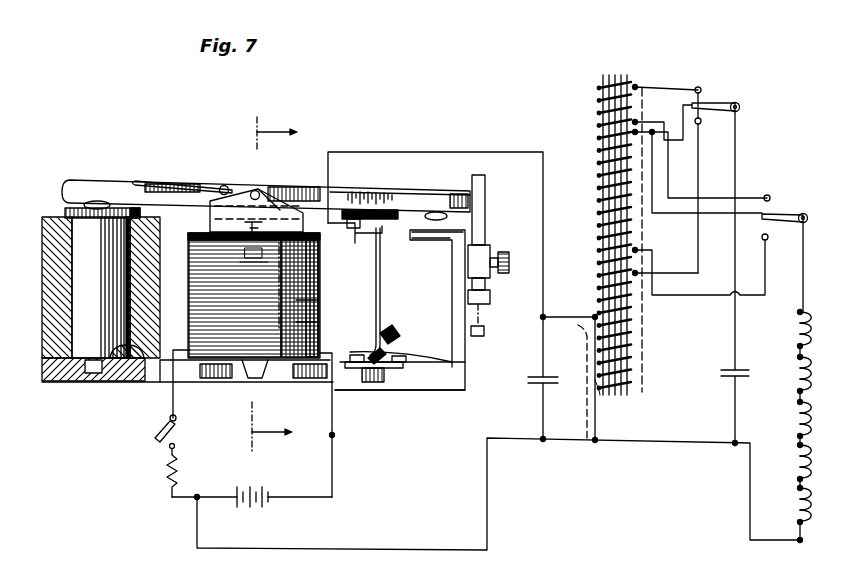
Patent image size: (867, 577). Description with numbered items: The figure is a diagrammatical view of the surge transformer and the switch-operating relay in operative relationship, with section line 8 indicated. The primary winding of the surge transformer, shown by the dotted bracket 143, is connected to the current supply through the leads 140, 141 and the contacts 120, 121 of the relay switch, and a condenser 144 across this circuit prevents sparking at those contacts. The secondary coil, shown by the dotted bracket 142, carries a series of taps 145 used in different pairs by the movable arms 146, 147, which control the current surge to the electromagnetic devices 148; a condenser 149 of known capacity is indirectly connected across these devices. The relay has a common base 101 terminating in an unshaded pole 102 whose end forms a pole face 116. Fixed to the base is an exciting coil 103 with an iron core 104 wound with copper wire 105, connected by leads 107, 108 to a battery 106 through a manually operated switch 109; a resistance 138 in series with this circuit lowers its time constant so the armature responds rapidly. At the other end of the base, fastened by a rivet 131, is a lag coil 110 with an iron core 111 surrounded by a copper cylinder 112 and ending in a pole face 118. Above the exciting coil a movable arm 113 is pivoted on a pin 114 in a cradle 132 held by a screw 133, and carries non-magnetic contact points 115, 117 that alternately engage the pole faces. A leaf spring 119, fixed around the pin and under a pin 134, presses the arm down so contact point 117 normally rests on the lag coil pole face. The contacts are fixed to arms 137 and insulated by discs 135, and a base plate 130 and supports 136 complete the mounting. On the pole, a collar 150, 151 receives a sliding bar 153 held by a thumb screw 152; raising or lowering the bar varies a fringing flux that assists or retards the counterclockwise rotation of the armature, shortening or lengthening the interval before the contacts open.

The section line 8 is at (277, 280).
The common base 101 is at (380, 372).
The unshaded pole 102 is at (485, 333).
The exciting coil 103 is at (320, 284).
The iron core 104 is at (296, 327).
The copper wire 105 is at (296, 306).
The battery 106 is at (250, 510).
The lead 107 is at (173, 400).
The lead 108 is at (332, 496).
The manually operated switch 109 is at (157, 433).
The lag coil 110 is at (150, 250).
The iron core 111 is at (88, 296).
The copper cylinder 112 is at (50, 382).
The movable arm 113 is at (428, 198).
The pin 114 is at (268, 190).
The contact point 115 is at (455, 218).
The pole face 116 is at (428, 240).
The contact point 117 is at (97, 202).
The pole face 118 is at (142, 213).
The leaf spring 119 is at (170, 163).
The contact 120 is at (452, 363).
The contact 121 is at (398, 341).
The base plate 130 is at (262, 384).
The rivet 131 is at (102, 385).
The cradle 132 is at (278, 215).
The screw 133 is at (268, 256).
The pin 134 is at (224, 186).
The insulating disc 135 is at (362, 209).
The contact spring support 136 is at (382, 233).
The arm 137 is at (381, 302).
The resistance 138 is at (166, 474).
The lead 140 is at (432, 138).
The lead 141 is at (395, 549).
The secondary coil 142 is at (642, 306).
The primary winding 143 is at (585, 382).
The condenser 144 is at (528, 380).
The taps 145 is at (636, 85).
The movable arm 146 is at (738, 101).
The movable arm 147 is at (785, 214).
The electromagnetic devices 148 is at (792, 395).
The condenser 149 is at (723, 378).
The collar 150 is at (490, 300).
The collar 151 is at (490, 250).
The thumb screw 152 is at (509, 262).
The sliding member 153 is at (487, 195).